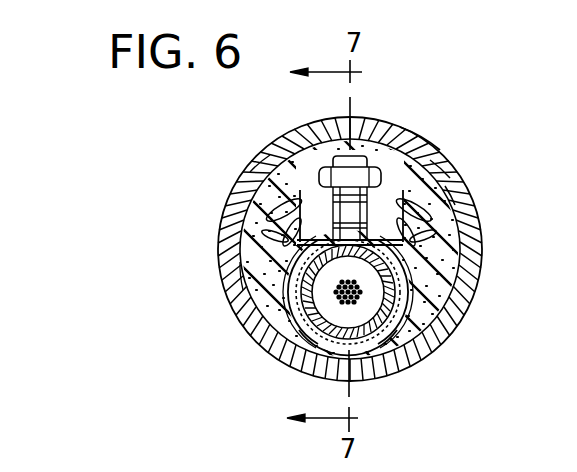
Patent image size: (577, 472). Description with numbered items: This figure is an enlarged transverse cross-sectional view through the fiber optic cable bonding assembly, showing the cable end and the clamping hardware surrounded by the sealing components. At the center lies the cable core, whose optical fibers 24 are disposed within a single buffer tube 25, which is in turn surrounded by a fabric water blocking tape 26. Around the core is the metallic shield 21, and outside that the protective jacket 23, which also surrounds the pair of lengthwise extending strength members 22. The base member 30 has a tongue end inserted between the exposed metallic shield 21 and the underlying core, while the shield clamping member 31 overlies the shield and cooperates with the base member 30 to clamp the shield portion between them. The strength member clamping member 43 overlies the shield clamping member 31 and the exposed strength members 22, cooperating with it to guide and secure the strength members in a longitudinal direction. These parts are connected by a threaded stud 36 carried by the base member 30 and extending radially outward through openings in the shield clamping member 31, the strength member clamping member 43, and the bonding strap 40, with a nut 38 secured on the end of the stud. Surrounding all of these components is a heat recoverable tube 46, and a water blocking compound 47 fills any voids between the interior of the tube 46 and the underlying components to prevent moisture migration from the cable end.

The metallic shield 21 is at (410, 365).
The strength members 22 is at (262, 248).
The protective jacket 23 is at (447, 328).
The optical fibers 24 is at (362, 293).
The buffer tube 25 is at (460, 250).
The fabric water blocking tape 26 is at (313, 367).
The base member 30 is at (240, 277).
The shield clamping member 31 is at (240, 258).
The threaded stud 36 is at (256, 168).
The nut 38 is at (423, 138).
The bonding strap 40 is at (440, 167).
The strength member clamping member 43 is at (457, 193).
The tube 46 is at (385, 142).
The water blocking compound 47 is at (372, 135).